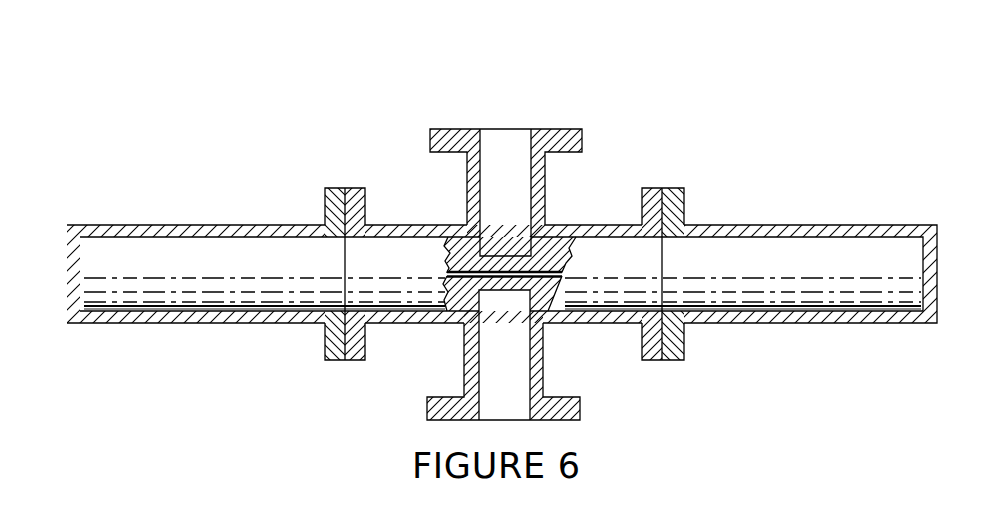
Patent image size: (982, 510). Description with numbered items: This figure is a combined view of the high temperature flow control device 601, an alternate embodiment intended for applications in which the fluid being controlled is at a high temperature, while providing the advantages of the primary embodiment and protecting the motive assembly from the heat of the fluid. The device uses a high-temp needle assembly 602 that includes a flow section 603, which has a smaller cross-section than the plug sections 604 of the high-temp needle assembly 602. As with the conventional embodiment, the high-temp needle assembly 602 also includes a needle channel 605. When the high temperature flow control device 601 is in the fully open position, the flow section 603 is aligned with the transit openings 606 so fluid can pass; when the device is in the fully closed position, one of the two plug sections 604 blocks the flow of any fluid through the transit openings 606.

The high temperature flow control device 601 is at (503, 93).
The high-temp needle assembly 602 is at (549, 245).
The flow section 603 is at (487, 290).
The plug sections 604 is at (406, 257).
The needle channel 605 is at (530, 278).
The transit openings 606 is at (508, 200).